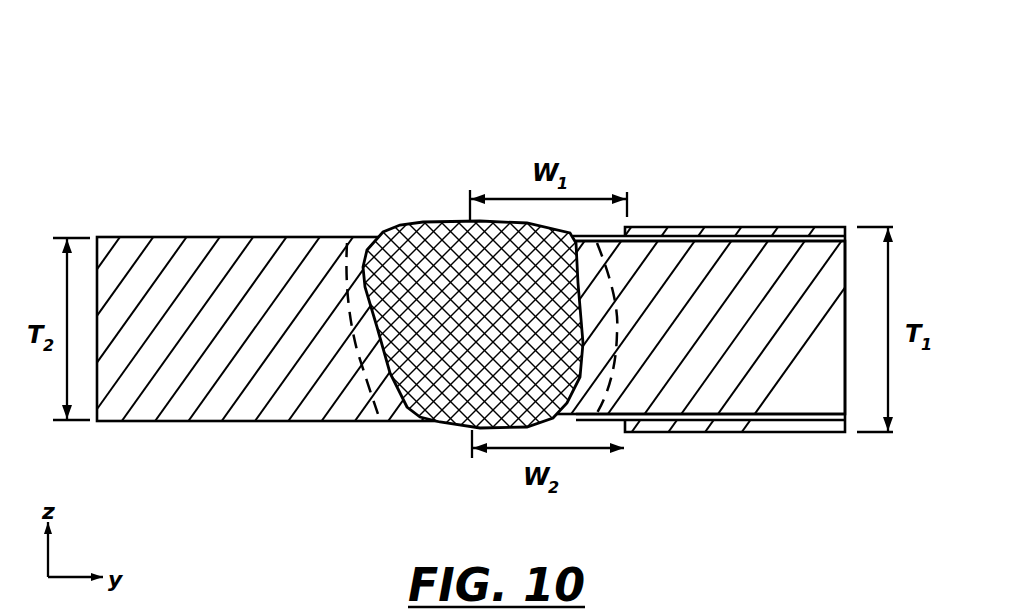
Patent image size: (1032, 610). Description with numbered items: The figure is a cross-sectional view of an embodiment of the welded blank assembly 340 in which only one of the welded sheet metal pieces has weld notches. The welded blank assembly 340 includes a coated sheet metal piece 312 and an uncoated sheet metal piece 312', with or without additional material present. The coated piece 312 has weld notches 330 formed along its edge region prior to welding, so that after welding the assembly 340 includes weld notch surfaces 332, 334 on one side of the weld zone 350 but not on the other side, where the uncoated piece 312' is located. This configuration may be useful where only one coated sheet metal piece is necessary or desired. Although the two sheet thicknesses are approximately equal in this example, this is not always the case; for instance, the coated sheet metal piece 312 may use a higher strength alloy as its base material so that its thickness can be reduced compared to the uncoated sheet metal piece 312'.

The uncoated sheet metal piece 312' is at (276, 280).
The coated sheet metal piece 312 is at (668, 291).
The welded blank assembly 340 is at (676, 247).
The weld notch surface 332 is at (614, 236).
The weld notch surface 334 is at (627, 237).
The weld notch 330 is at (462, 269).
The weld zone 350 is at (437, 204).